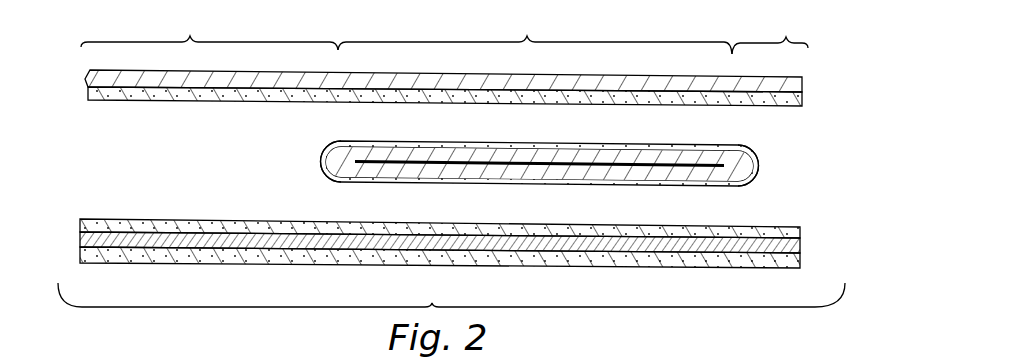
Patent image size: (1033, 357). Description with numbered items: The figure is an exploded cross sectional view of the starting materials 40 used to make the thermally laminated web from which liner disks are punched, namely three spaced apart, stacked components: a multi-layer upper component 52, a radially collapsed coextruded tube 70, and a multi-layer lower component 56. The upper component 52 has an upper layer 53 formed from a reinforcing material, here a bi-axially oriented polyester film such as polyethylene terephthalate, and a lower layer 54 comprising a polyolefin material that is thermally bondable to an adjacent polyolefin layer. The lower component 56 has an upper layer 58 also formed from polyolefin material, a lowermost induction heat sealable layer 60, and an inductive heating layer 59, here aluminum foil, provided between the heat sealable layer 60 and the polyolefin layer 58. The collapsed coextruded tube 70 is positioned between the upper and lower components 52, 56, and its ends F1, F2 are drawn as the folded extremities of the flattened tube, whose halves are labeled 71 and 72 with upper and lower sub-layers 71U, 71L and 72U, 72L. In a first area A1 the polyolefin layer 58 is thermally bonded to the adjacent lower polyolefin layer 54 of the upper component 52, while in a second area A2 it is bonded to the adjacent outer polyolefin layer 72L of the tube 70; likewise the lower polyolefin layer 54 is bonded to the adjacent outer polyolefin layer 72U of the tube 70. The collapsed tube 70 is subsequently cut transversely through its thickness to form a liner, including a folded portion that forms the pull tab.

The starting materials 40 is at (851, 46).
The multi-layer upper component 52 is at (812, 76).
The upper layer 53 is at (86, 78).
The lower layer 54 is at (86, 93).
The lower multi-layer component 56 is at (812, 227).
The upper layer 58 is at (82, 222).
The inductive heating layer 59 is at (80, 240).
The induction heat sealable layer 60 is at (80, 255).
The collapsed coextruded tube 70 is at (750, 143).
The first core section 71 is at (357, 152).
The first core section upper layer 71U is at (436, 152).
The first core section lower layer 71L is at (437, 168).
The second core section 72 is at (650, 183).
The outer polyolefin layer 72U is at (545, 147).
The outer polyolefin layer 72L is at (540, 181).
The first fold end F1 is at (734, 183).
The second fold end F2 is at (340, 168).
The first area A1 is at (444, 32).
The second area A2 is at (535, 32).